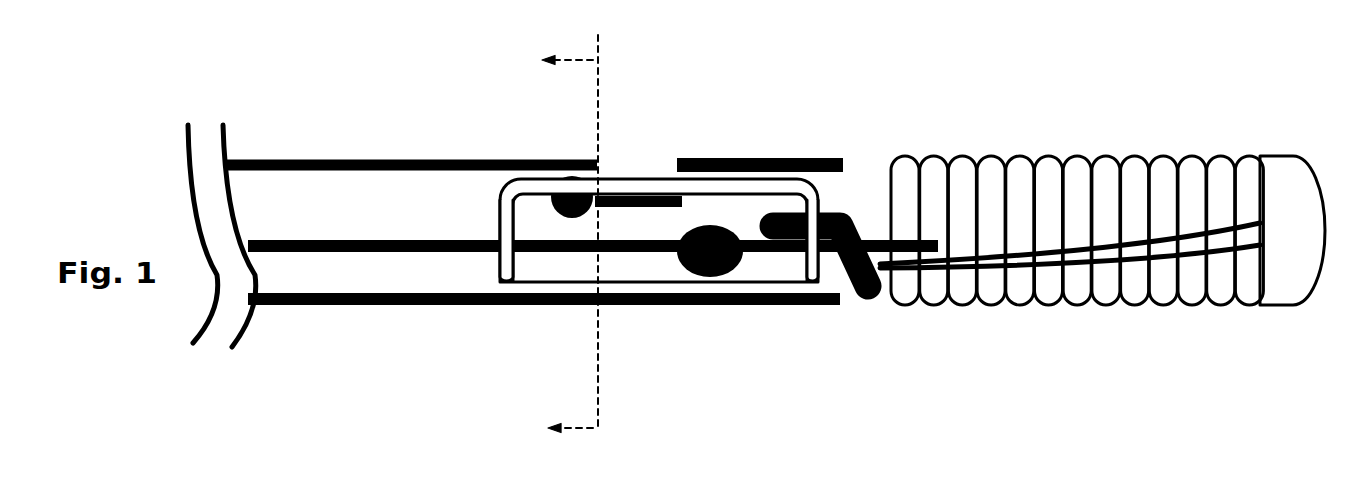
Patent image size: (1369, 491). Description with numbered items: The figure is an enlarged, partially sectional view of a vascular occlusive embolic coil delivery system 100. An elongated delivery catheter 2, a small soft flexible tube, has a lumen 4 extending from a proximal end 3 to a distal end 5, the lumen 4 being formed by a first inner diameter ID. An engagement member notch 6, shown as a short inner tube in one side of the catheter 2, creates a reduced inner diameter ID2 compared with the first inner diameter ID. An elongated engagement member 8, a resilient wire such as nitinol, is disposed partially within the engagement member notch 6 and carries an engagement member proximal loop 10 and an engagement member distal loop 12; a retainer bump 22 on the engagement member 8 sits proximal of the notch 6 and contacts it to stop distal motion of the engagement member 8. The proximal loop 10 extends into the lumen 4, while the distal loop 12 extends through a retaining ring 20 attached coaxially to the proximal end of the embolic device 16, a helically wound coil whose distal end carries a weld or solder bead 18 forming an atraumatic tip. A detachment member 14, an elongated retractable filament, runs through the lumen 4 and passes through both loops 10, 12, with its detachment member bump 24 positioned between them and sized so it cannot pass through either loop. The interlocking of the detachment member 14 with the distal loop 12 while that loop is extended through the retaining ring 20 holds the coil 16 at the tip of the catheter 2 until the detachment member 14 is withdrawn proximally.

The vascular occlusive embolic coil delivery system 100 is at (482, 76).
The delivery catheter 2 is at (596, 330).
The proximal end 3 is at (317, 182).
The lumen 4 is at (315, 275).
The distal end 5 is at (817, 190).
The engagement member notch 6 is at (625, 161).
The engagement member 8 is at (730, 178).
The engagement member proximal loop 10 is at (490, 219).
The engagement member distal loop 12 is at (832, 276).
The detachment member 14 is at (544, 276).
The embolic device 16 is at (1000, 157).
The weld bead 18 is at (1305, 253).
The retaining ring 20 is at (854, 196).
The retainer bump 22 is at (572, 233).
The detachment member bump 24 is at (742, 283).
The first inner diameter ID is at (370, 279).
The reduced inner diameter ID2 is at (636, 221).